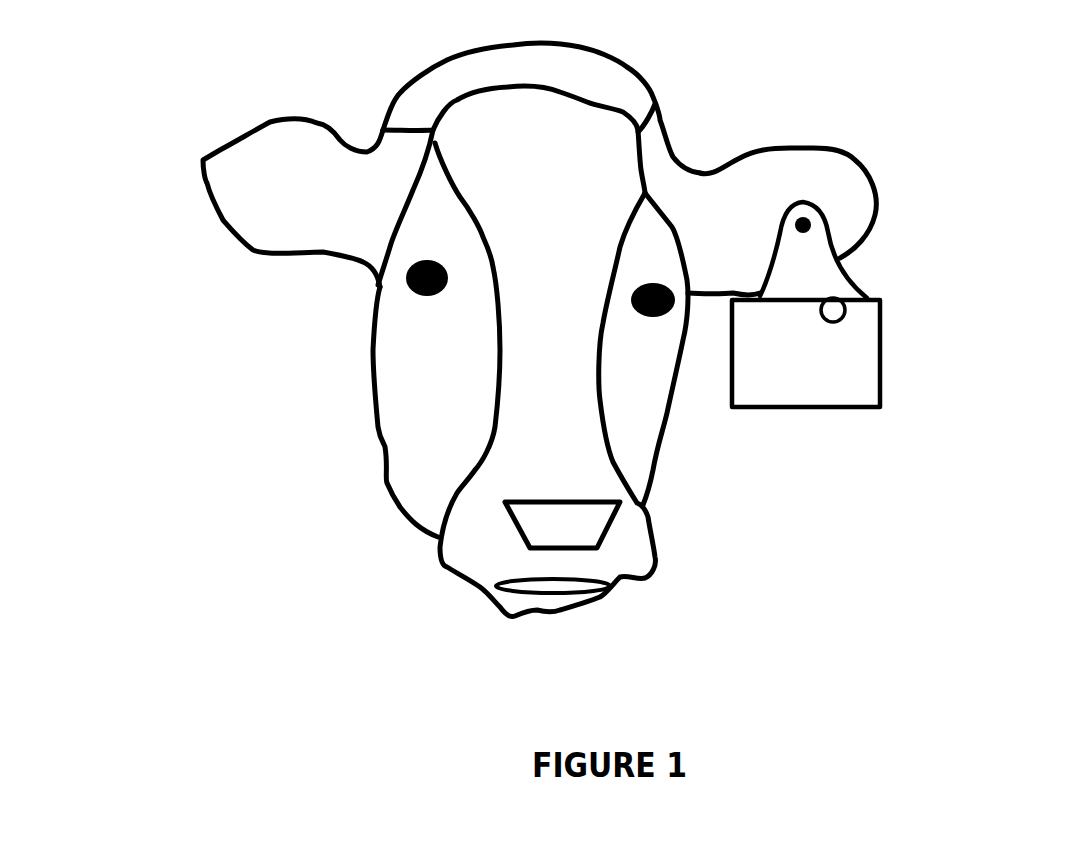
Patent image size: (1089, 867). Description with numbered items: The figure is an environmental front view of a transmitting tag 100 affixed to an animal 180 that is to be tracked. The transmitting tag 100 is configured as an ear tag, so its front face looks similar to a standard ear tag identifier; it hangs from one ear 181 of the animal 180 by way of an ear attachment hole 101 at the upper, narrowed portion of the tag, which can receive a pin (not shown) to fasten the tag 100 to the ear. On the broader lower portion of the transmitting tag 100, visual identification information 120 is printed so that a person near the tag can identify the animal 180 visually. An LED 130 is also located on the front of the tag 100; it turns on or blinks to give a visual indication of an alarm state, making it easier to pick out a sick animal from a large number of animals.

The transmitting tag 100 is at (902, 313).
The ear attachment hole 101 is at (843, 225).
The visual identification information 120 is at (882, 363).
The LED 130 is at (877, 310).
The animal 180 is at (570, 329).
The ear 181 is at (863, 178).